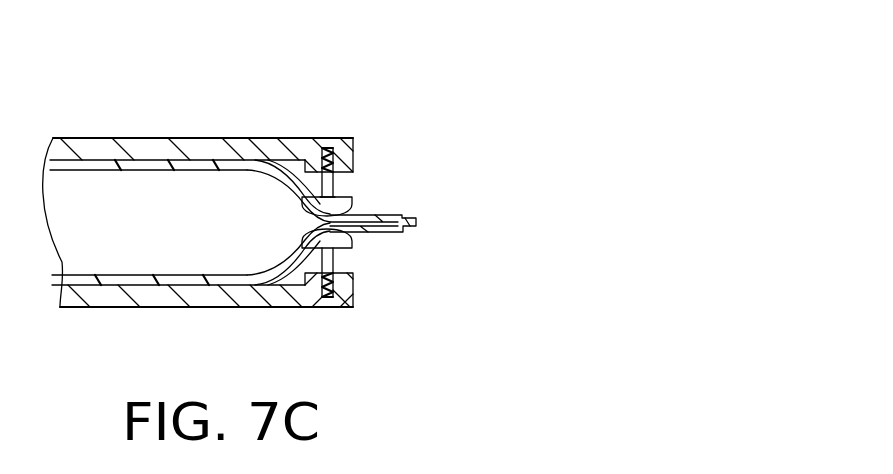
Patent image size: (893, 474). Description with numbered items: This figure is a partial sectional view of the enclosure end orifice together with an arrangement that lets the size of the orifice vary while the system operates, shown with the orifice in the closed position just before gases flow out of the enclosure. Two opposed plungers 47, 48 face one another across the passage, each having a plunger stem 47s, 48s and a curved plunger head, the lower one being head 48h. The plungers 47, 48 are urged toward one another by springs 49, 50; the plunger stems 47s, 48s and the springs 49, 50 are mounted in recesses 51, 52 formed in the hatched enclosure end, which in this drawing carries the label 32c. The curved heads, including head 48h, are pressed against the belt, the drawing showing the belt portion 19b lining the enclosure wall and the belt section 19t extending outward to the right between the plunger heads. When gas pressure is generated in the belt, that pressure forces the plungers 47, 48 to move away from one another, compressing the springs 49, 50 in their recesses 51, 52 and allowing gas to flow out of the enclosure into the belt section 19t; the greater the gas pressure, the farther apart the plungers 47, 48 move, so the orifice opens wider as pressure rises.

The belt portion 19b is at (177, 172).
The valve block 32c is at (310, 131).
The spring 49 is at (340, 138).
The recess 51 is at (334, 183).
The plunger 47 is at (364, 178).
The plunger stem 47s is at (338, 190).
The curved plunger head 48h is at (258, 168).
The belt section 19t is at (417, 222).
The plunger 48 is at (357, 260).
The plunger stem 48s is at (355, 265).
The spring 50 is at (333, 300).
The recess 52 is at (322, 300).